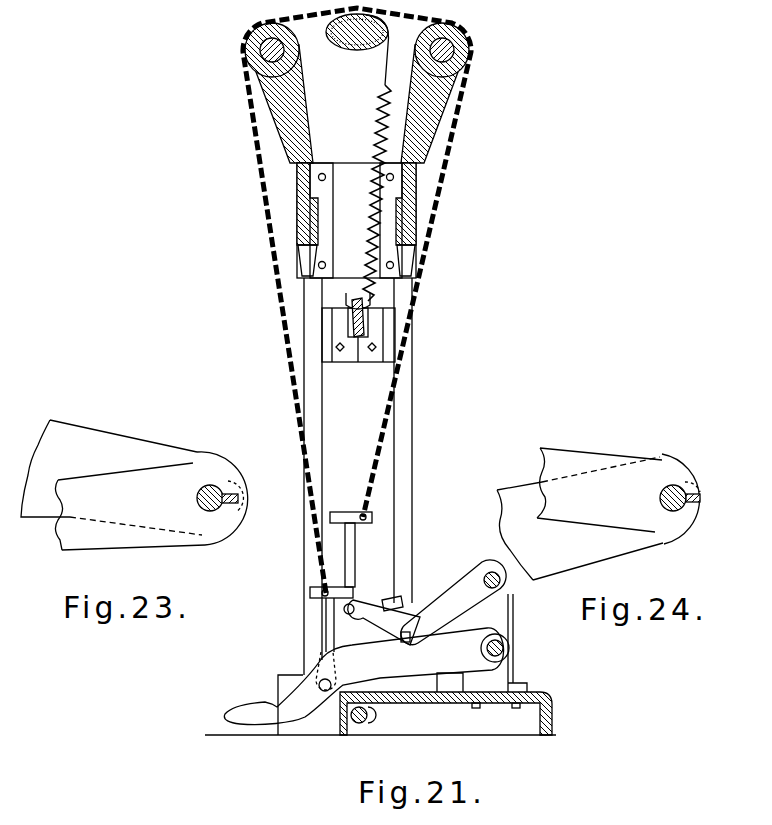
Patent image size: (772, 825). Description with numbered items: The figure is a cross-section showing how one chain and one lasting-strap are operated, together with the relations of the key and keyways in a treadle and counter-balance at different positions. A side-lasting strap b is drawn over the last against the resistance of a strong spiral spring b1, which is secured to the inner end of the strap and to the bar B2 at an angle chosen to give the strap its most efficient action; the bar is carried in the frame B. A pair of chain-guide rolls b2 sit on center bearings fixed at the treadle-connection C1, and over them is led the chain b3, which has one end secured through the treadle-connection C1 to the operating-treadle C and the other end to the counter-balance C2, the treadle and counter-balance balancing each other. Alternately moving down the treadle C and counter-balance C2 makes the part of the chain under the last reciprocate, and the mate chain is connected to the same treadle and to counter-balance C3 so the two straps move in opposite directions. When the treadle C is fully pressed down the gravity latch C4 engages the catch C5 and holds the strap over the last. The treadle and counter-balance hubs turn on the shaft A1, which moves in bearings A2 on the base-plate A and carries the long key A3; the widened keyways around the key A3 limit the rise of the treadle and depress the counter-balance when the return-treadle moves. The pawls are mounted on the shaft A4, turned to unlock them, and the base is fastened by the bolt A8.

In FIG. 21, the side-lasting strap b is at (384, 63).
In FIG. 21, the spiral spring b1 is at (379, 108).
In FIG. 21, the chain-guide roll b2 is at (246, 51).
In FIG. 21, the chain b3 is at (437, 209).
In FIG. 21, the frame B is at (403, 416).
In FIG. 21, the bar B2 is at (335, 342).
In FIG. 21, the operating-treadle C is at (363, 676).
In FIG. 23, the operating-treadle C is at (130, 506).
In FIG. 24, the operating-treadle C is at (599, 490).
In FIG. 21, the treadle-connection C1 is at (329, 636).
In FIG. 21, the counter-balance C2 is at (382, 620).
In FIG. 23, the counter-balance C2 is at (111, 477).
In FIG. 24, the counter-balance C2 is at (580, 518).
In FIG. 21, the counter-balance C3 is at (344, 555).
In FIG. 21, the gravity latch C4 is at (453, 602).
In FIG. 21, the catch C5 is at (414, 649).
In FIG. 21, the base-plate A is at (552, 694).
In FIG. 21, the shaft A1 is at (500, 638).
In FIG. 23, the shaft A1 is at (215, 512).
In FIG. 24, the shaft A1 is at (678, 516).
In FIG. 21, the bearing A2 is at (505, 607).
In FIG. 21, the key A3 is at (507, 649).
In FIG. 23, the key A3 is at (240, 498).
In FIG. 24, the key A3 is at (702, 498).
In FIG. 21, the shaft A4 is at (489, 577).
In FIG. 21, the bolt A8 is at (358, 724).